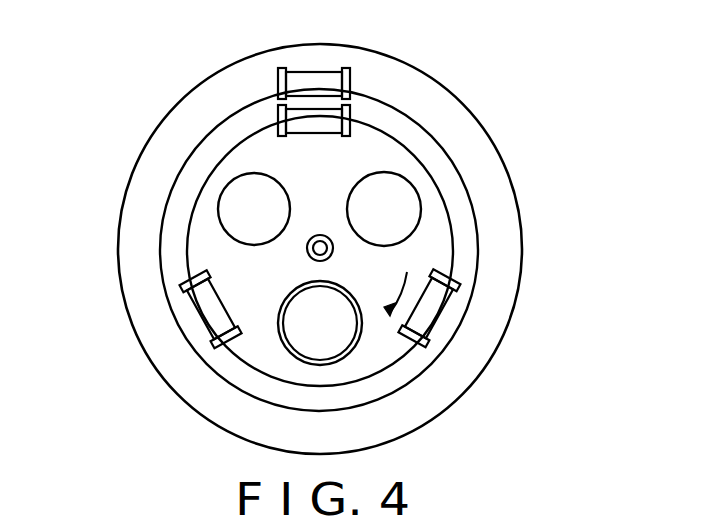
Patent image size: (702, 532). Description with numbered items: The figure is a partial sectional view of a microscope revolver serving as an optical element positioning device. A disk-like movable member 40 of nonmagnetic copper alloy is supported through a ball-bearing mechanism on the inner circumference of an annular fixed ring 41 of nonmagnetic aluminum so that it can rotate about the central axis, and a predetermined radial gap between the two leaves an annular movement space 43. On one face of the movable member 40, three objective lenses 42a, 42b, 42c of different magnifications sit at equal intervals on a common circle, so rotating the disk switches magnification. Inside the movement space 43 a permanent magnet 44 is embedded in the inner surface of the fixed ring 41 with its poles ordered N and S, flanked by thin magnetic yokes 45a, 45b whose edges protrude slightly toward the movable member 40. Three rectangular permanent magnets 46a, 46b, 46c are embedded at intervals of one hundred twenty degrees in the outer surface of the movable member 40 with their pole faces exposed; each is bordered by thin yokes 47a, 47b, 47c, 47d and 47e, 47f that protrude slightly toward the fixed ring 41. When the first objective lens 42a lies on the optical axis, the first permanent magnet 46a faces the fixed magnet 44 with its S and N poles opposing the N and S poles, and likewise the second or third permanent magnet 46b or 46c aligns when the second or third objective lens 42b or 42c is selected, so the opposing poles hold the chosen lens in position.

The movable member 40 is at (443, 230).
The fixed ring 41 is at (462, 113).
The first objective lens 42a is at (343, 344).
The second objective lens 42b is at (417, 200).
The third objective lens 42c is at (222, 203).
The annular movement space 43 is at (200, 143).
The permanent magnet 44 is at (322, 76).
The yoke 45a is at (352, 76).
The yoke 45b is at (278, 76).
The first permanent magnet 46a is at (279, 122).
The second permanent magnet 46b is at (203, 313).
The third permanent magnet 46c is at (435, 312).
The yoke 47a is at (352, 112).
The yoke 47b is at (279, 106).
The yoke 47c is at (190, 273).
The yoke 47d is at (238, 348).
The yoke 47e is at (413, 343).
The yoke 47f is at (455, 268).